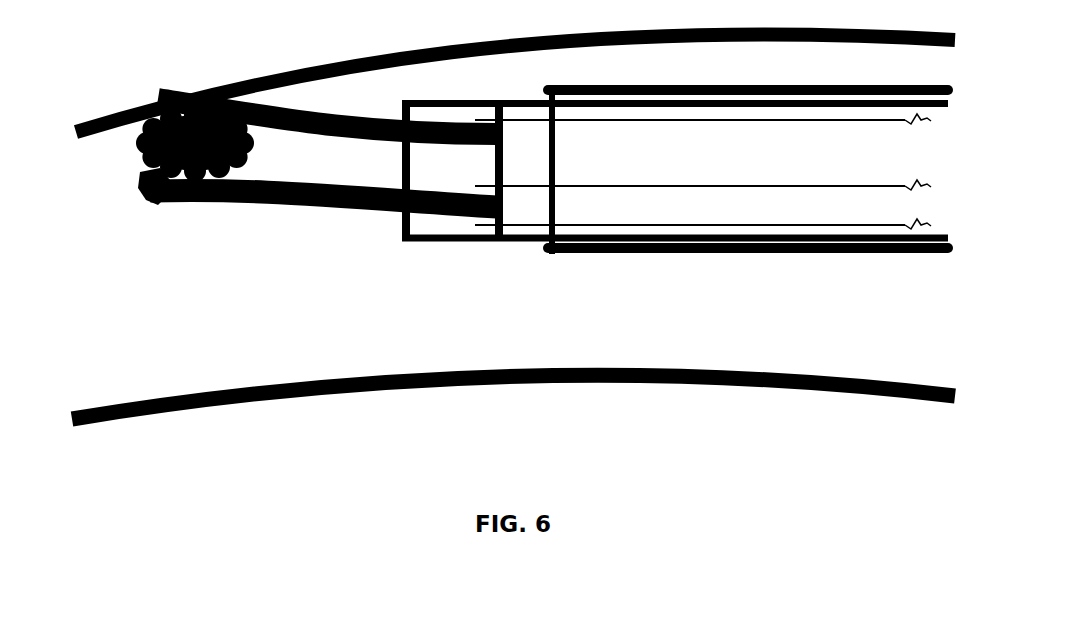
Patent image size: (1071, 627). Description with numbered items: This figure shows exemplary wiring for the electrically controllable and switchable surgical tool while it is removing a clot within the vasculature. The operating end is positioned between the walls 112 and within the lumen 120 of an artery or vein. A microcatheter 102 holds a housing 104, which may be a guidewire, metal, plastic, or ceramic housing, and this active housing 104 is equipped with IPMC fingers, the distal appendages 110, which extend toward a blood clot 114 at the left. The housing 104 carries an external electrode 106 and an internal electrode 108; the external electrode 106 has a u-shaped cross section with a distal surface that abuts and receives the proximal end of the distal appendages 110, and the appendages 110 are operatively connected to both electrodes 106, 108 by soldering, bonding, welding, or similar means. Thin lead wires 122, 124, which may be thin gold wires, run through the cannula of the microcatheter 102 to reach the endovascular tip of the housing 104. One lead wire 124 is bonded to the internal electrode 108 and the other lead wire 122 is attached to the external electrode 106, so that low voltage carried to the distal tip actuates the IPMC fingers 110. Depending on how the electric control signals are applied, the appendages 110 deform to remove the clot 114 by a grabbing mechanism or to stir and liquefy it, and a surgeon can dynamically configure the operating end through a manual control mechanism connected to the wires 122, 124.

The catheter 102 is at (694, 259).
The housing 104 is at (512, 242).
The external electrode 106 is at (427, 120).
The internal electrode 108 is at (432, 176).
The distal appendages 110 is at (288, 140).
The walls 112 is at (369, 372).
The blood clot 114 is at (144, 176).
The lumen 120 is at (834, 357).
The lead wire 122 is at (595, 218).
The lead wire 124 is at (778, 180).